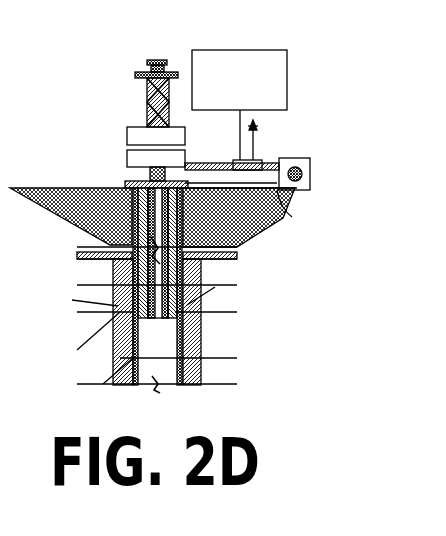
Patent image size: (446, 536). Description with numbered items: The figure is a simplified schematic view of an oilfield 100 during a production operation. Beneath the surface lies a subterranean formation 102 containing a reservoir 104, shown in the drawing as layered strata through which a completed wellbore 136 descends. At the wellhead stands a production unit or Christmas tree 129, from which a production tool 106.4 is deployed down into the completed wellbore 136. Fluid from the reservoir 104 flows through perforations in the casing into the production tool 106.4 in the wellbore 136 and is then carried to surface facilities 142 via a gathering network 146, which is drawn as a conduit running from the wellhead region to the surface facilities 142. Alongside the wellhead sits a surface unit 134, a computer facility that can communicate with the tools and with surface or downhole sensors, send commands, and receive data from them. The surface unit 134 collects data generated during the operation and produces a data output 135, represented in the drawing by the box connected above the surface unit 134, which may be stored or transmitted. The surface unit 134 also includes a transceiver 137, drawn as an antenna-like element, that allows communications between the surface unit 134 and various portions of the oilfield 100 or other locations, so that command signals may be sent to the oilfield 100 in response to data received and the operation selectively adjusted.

The oilfield 100 is at (76, 96).
The subterranean formation 102 is at (250, 292).
The reservoir 104 is at (237, 346).
The production tool 106.4 is at (68, 299).
The Christmas tree 129 is at (160, 54).
The surface unit 134 is at (233, 160).
The data output 135 is at (257, 50).
The completed wellbore 136 is at (187, 224).
The transceiver 137 is at (256, 138).
The surface facilities 142 is at (310, 170).
The gathering network 146 is at (304, 210).